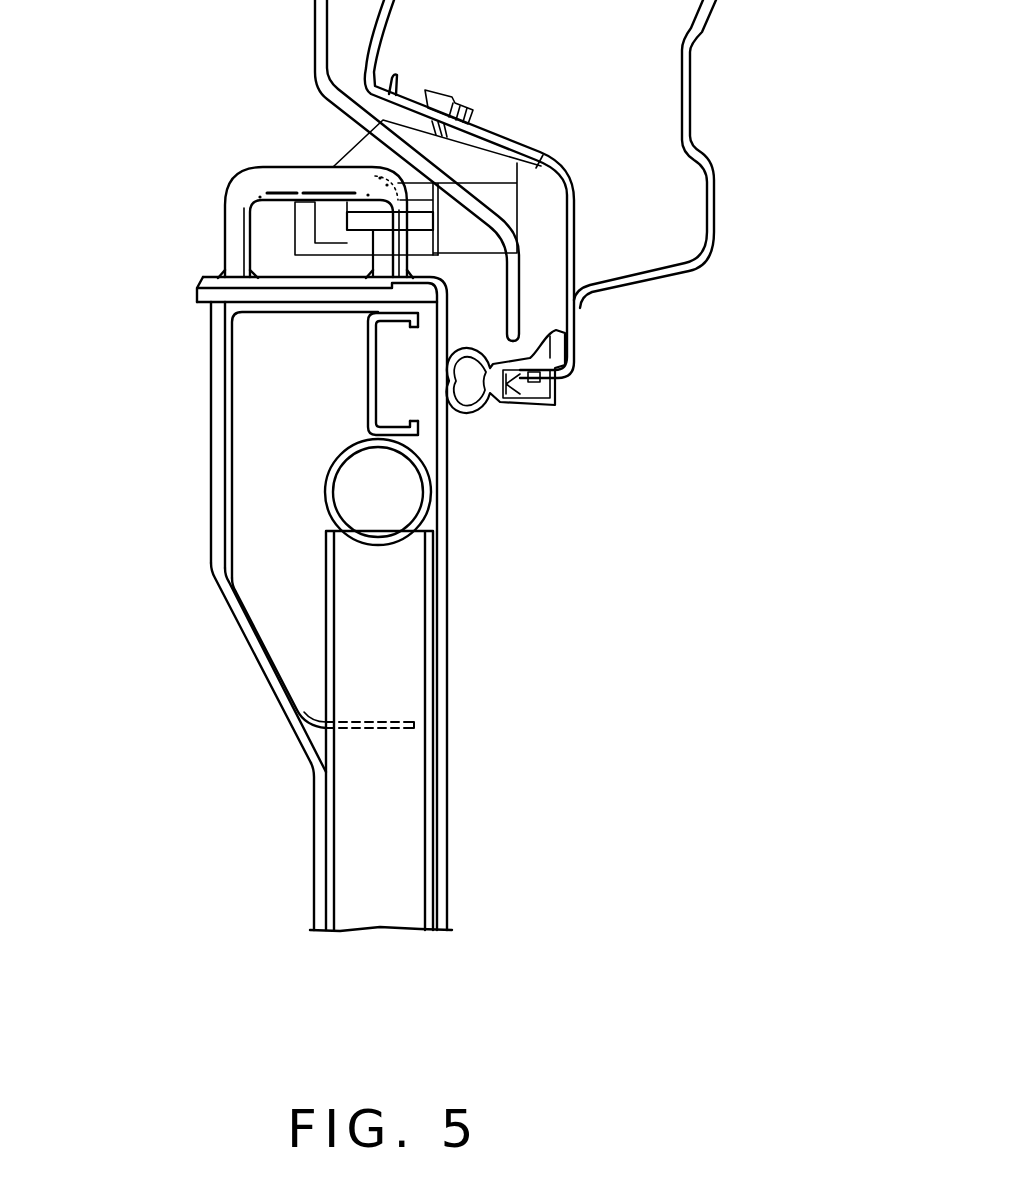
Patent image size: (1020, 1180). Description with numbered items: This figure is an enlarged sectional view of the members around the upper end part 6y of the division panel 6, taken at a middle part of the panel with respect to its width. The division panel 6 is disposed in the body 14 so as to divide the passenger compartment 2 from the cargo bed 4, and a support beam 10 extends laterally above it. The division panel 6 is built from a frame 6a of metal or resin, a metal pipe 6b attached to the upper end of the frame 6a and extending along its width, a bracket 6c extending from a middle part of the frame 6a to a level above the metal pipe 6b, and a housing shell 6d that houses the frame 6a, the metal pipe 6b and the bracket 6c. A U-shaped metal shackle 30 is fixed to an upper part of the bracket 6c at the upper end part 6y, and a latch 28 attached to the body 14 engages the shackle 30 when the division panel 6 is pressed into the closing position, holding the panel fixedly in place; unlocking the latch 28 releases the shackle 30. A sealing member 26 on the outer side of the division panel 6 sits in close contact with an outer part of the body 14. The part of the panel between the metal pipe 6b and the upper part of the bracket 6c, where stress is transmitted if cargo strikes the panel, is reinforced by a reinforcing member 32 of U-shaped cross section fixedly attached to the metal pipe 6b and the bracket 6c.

The passenger compartment 2 is at (80, 484).
The cargo bed 4 is at (738, 484).
The division panel 6 is at (347, 603).
The frame 6a is at (328, 647).
The metal pipe 6b is at (327, 487).
The bracket 6c is at (240, 608).
The housing shell 6d is at (312, 768).
The upper end part 6y is at (210, 355).
The support beam 10 is at (743, 100).
The body 14 is at (492, 923).
The sealing member 26 is at (478, 412).
The latch 28 is at (353, 221).
The U-shaped shackle 30 is at (230, 208).
The reinforcing member 32 is at (366, 373).